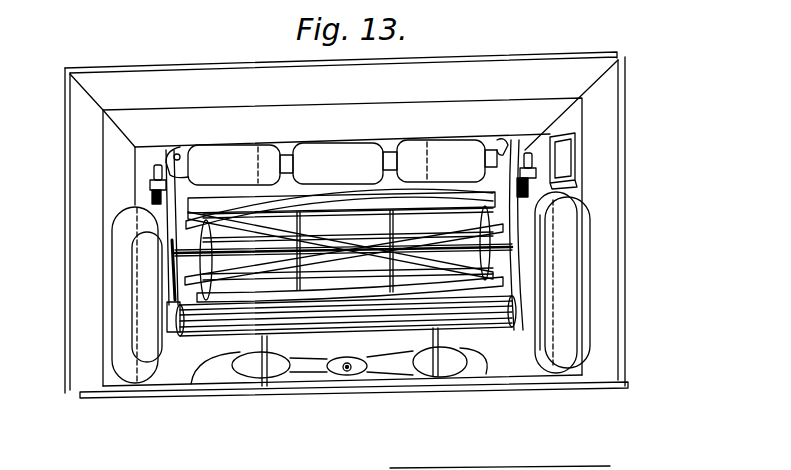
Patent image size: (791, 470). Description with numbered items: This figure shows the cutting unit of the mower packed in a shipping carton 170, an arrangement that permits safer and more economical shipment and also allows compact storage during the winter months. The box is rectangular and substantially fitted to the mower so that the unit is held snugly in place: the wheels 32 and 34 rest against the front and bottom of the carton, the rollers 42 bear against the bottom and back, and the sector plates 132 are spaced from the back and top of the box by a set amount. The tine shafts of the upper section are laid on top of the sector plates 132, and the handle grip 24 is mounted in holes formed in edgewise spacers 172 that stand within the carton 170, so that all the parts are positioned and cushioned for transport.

The carton 170 is at (637, 234).
The wheel 32 is at (118, 304).
The wheel 34 is at (573, 290).
The rollers 42 is at (315, 153).
The sector plates 132 is at (167, 153).
The edgewise spacers 172 is at (270, 343).
The handle grip 24 is at (280, 368).